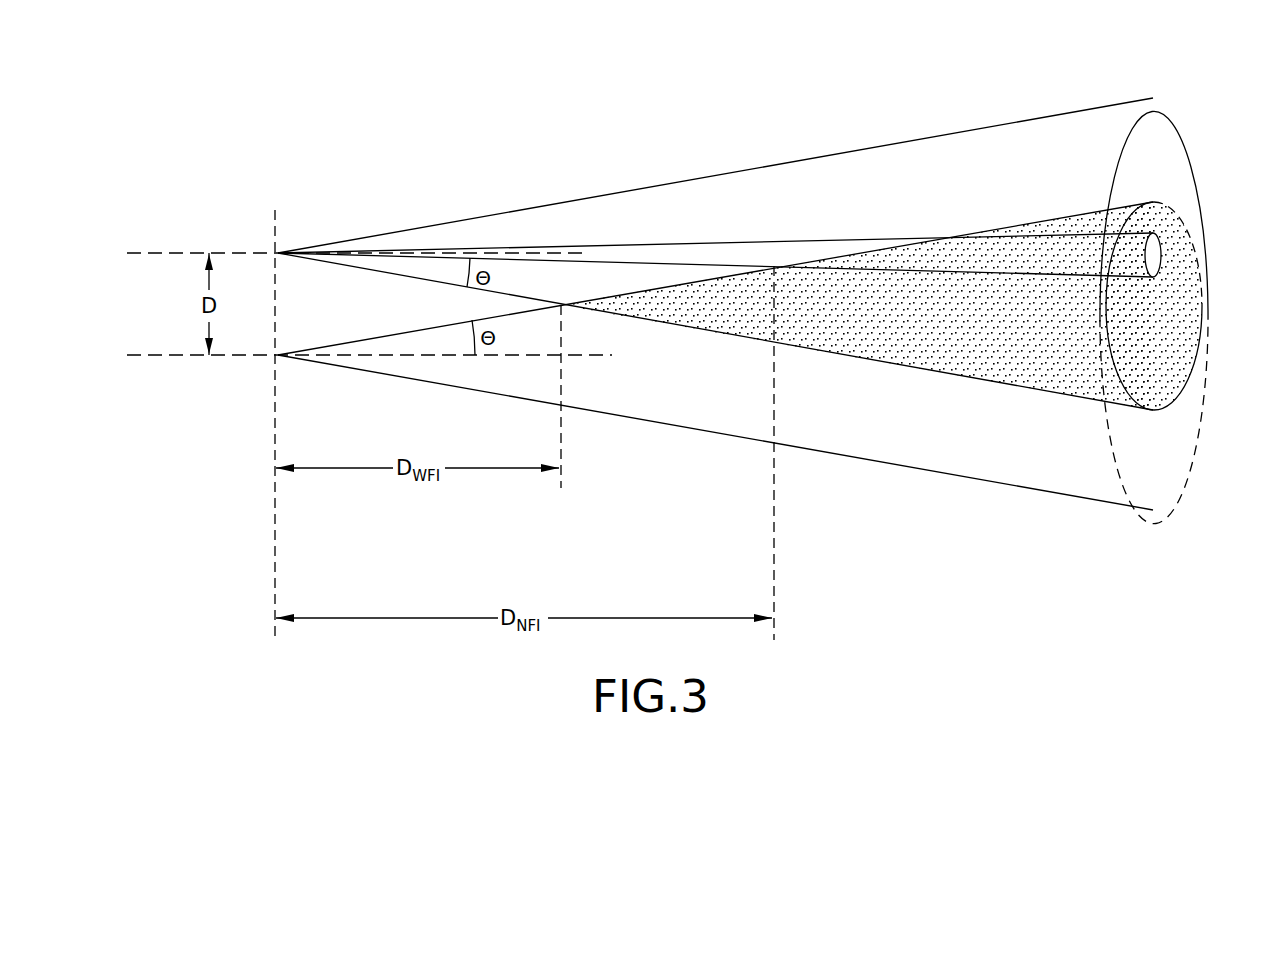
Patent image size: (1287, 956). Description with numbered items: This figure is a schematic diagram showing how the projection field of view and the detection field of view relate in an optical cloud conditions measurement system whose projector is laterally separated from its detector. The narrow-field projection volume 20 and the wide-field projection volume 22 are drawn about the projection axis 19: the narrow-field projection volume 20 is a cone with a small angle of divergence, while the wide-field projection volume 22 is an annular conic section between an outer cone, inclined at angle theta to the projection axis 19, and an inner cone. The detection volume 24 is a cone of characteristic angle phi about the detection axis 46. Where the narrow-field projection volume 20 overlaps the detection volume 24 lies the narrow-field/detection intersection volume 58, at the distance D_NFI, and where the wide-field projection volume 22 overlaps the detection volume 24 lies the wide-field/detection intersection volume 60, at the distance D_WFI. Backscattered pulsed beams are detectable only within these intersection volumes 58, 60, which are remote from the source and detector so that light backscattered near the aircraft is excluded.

The projection axis 19 is at (134, 253).
The detection axis 46 is at (134, 357).
The narrow-field projection volume 20 is at (717, 250).
The wide-field projection volume 22 is at (900, 142).
The detection volume 24 is at (893, 452).
The narrow-field/detection intersection volume 58 is at (1142, 249).
The wide-field/detection intersection volume 60 is at (1160, 300).